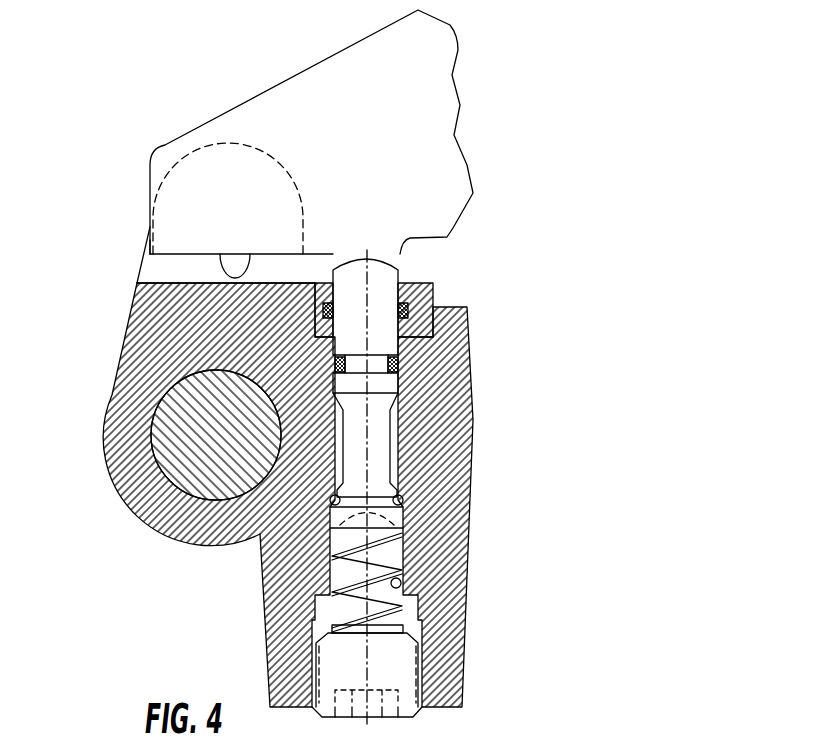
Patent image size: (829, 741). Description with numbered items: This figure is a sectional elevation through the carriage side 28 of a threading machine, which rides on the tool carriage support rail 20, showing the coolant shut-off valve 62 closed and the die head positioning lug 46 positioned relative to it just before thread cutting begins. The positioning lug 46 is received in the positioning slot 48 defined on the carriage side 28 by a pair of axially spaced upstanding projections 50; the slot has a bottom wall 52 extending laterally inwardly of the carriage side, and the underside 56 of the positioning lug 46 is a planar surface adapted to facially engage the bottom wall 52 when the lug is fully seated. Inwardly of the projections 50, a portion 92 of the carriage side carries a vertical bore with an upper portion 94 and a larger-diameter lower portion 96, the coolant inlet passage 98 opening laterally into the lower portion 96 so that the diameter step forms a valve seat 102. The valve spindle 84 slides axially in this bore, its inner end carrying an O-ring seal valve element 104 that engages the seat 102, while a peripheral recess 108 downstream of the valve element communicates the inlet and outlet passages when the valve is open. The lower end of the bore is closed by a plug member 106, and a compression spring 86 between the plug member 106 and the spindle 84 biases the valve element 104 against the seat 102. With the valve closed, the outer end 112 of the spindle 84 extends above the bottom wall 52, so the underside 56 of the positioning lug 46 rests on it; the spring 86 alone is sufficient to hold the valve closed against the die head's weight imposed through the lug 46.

The tool carriage support rail 20 is at (192, 472).
The carriage side 28 is at (222, 608).
The positioning lug 46 is at (308, 78).
The positioning slot 48 is at (145, 258).
The upstanding projections 50 is at (148, 268).
The bottom wall 52 is at (148, 275).
The underside of positioning lug 56 is at (248, 275).
The shut-off valve 62 is at (567, 315).
The valve spindle 84 is at (385, 337).
The compression spring 86 is at (392, 613).
The portion of carriage side 92 is at (468, 322).
The upper bore portion 94 is at (400, 373).
The lower bore portion 96 is at (397, 580).
The coolant inlet passage 98 is at (472, 523).
The valve seat 102 is at (400, 500).
The O-ring seal valve element 104 is at (330, 513).
The plug member 106 is at (407, 677).
The peripheral recess 108 is at (385, 432).
The outer end of spindle 112 is at (383, 278).